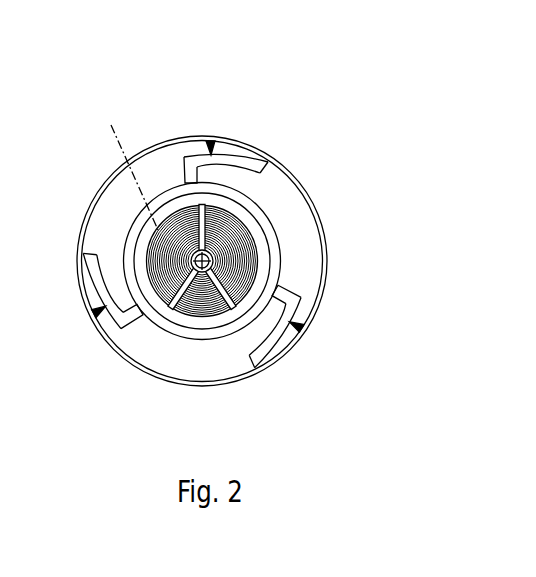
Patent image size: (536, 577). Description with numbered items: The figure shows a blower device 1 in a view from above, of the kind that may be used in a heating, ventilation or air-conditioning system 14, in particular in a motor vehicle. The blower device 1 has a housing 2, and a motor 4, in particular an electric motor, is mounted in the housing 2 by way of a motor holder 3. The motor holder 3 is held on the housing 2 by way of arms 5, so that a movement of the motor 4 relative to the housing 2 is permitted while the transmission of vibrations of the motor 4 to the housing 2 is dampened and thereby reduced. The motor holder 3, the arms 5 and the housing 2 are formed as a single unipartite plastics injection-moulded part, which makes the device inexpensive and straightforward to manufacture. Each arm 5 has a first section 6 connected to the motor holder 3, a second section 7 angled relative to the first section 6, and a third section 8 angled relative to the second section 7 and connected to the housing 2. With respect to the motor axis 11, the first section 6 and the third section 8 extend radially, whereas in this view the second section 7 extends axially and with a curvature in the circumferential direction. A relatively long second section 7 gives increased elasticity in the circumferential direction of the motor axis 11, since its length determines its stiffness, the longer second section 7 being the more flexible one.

The blower device 1 is at (354, 117).
The housing 2 is at (315, 206).
The motor holder 3 is at (183, 334).
The motor 4 is at (202, 311).
The arm 5 is at (211, 141).
The first section 6 is at (185, 165).
The second section 7 is at (239, 166).
The third section 8 is at (268, 162).
The motor axis 11 is at (126, 168).
The heating, ventilation or air-conditioning system 14 is at (402, 268).